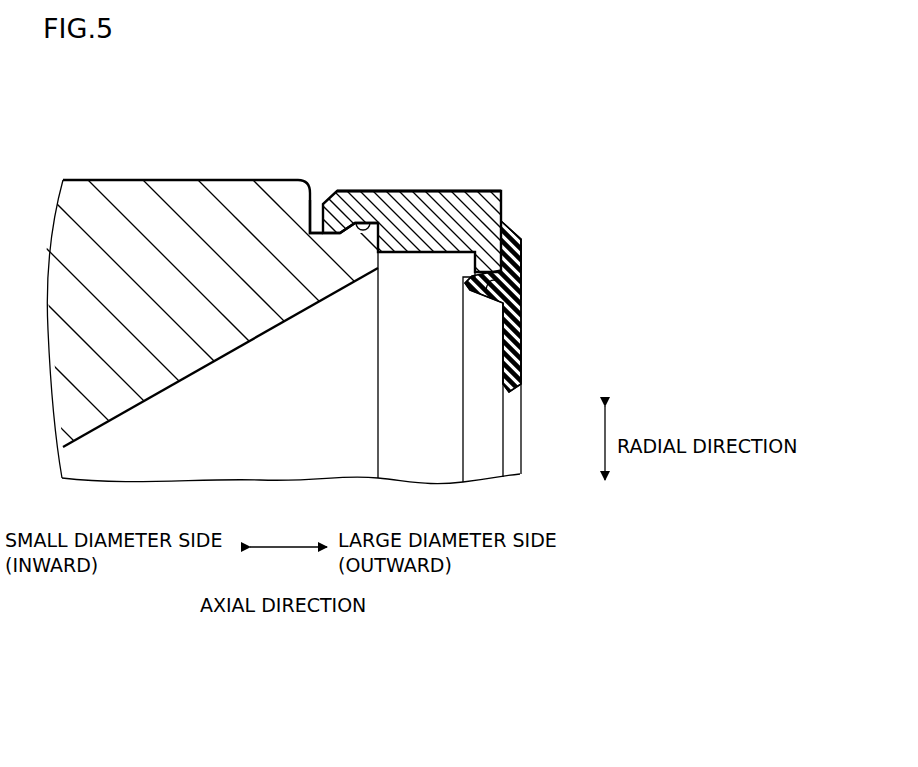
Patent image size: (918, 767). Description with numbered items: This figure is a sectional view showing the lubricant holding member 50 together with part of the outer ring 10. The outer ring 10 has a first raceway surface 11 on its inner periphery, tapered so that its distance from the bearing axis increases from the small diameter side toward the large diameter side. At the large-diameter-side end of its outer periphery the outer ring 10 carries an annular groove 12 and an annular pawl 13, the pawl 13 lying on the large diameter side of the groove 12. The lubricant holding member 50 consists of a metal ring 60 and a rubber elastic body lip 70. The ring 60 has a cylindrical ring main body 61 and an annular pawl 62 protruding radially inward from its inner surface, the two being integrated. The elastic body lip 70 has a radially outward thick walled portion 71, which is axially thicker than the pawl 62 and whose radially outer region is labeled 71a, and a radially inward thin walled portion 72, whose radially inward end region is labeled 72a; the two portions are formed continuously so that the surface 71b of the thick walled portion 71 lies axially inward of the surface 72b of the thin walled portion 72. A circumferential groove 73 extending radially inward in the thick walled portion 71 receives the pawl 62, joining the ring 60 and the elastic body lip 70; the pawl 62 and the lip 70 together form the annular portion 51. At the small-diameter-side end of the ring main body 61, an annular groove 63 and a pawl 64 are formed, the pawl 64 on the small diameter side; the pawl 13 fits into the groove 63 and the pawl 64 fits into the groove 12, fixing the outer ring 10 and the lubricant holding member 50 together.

The outer ring 10 is at (135, 188).
The first raceway surface 11 is at (150, 425).
The annular groove 12 is at (316, 232).
The annular pawl 13 is at (382, 260).
The lubricant holding member 50 is at (494, 186).
The annular portion 51 is at (512, 430).
The ring 60 is at (462, 186).
The ring main body 61 is at (421, 189).
The annular pawl 62 is at (522, 267).
The annular groove 63 is at (364, 228).
The pawl 64 is at (332, 248).
The elastic body lip 70 is at (526, 310).
The thick walled portion 71 is at (522, 245).
The seal lip base 71a is at (521, 258).
The surface of the thick walled portion 71b is at (466, 281).
The thin walled portion 72 is at (521, 341).
The elastic portion end 72a is at (513, 370).
The surface of the thin walled portion 72b is at (504, 348).
The groove 73 is at (500, 288).